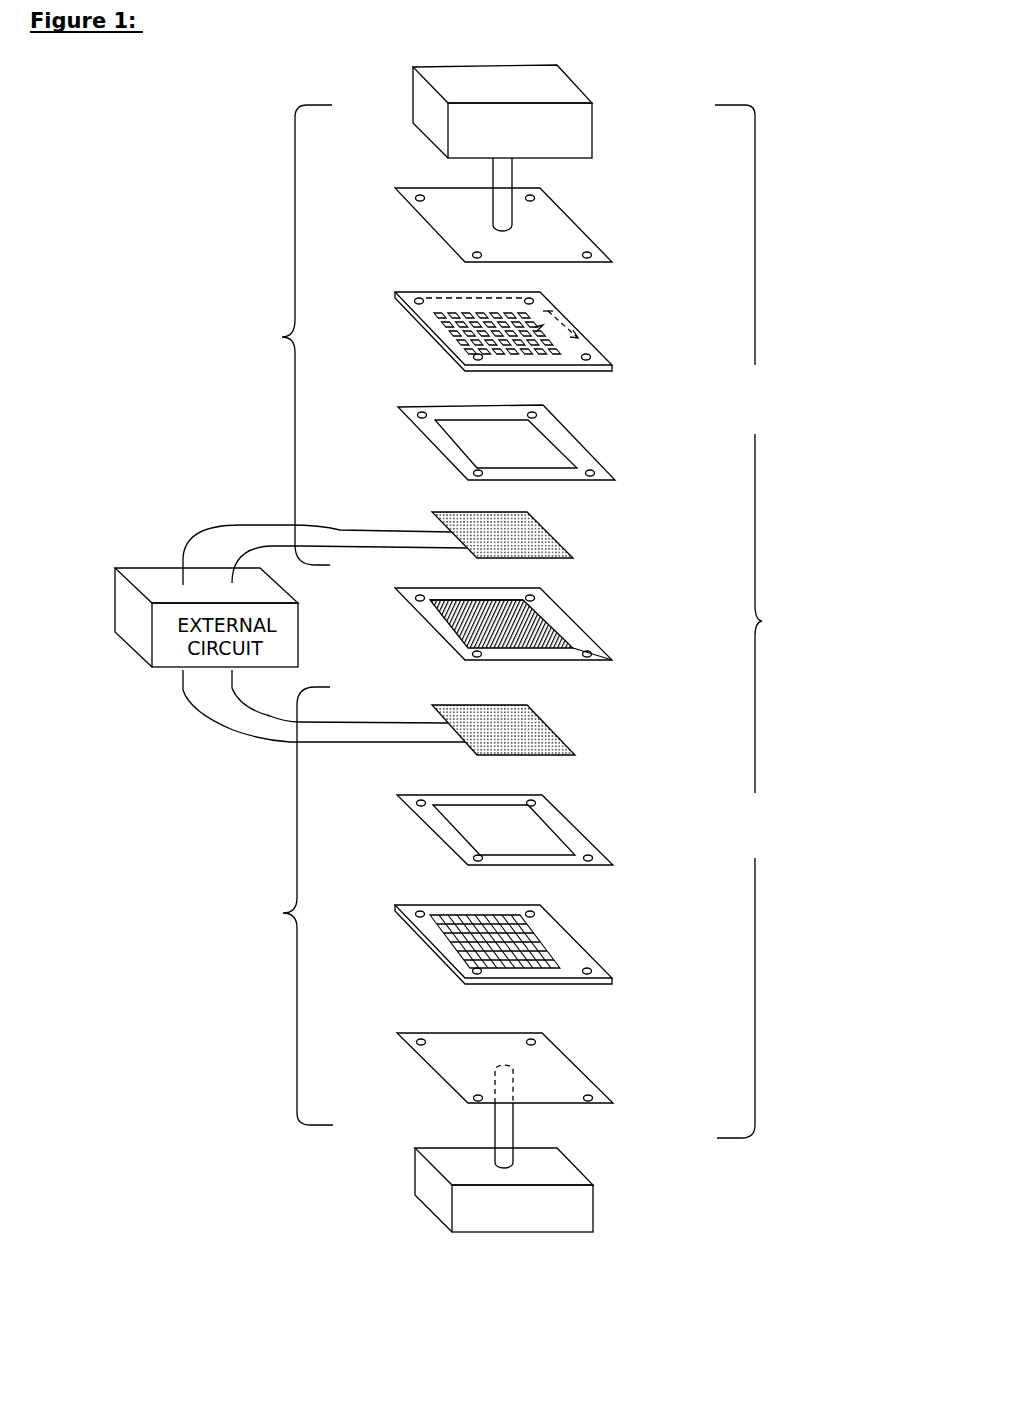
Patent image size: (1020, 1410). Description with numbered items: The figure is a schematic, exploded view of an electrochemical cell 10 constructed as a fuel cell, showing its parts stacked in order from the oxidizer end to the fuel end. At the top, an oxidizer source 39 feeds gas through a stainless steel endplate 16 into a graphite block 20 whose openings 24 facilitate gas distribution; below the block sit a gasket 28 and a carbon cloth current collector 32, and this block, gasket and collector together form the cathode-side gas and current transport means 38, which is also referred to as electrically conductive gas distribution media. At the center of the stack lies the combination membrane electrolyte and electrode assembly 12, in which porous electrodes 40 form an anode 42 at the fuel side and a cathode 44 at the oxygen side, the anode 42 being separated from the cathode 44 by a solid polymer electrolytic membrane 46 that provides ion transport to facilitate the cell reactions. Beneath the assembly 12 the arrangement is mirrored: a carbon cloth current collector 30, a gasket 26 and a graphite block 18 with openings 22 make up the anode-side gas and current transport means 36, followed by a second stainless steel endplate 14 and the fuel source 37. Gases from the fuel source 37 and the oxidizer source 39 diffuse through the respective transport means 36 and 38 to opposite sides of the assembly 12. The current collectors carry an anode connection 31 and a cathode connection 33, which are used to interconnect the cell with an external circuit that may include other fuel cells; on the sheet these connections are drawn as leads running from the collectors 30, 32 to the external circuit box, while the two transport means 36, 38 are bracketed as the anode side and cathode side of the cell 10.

The electrochemical cell 10 is at (762, 621).
The membrane electrolyte and electrode assembly 12 is at (547, 628).
The stainless steel endplate 14 is at (560, 1063).
The stainless steel endplate 16 is at (580, 243).
The graphite block 18 is at (544, 933).
The graphite block 20 is at (542, 329).
The openings 22 is at (527, 923).
The openings 24 is at (540, 302).
The gasket 26 is at (570, 832).
The gasket 28 is at (573, 447).
The carbon cloth current collector 30 is at (542, 733).
The anode connection 31 is at (413, 742).
The carbon cloth current collector 32 is at (543, 540).
The cathode connection 33 is at (392, 532).
The gas and current transport means 36 is at (283, 913).
The fuel source 37 is at (538, 1160).
The gas and current transport means 38 is at (282, 337).
The oxidizer source 39 is at (583, 123).
The porous electrodes 40 is at (558, 628).
The anode 42 is at (540, 640).
The cathode 44 is at (540, 630).
The solid polymer electrolytic membrane 46 is at (600, 650).